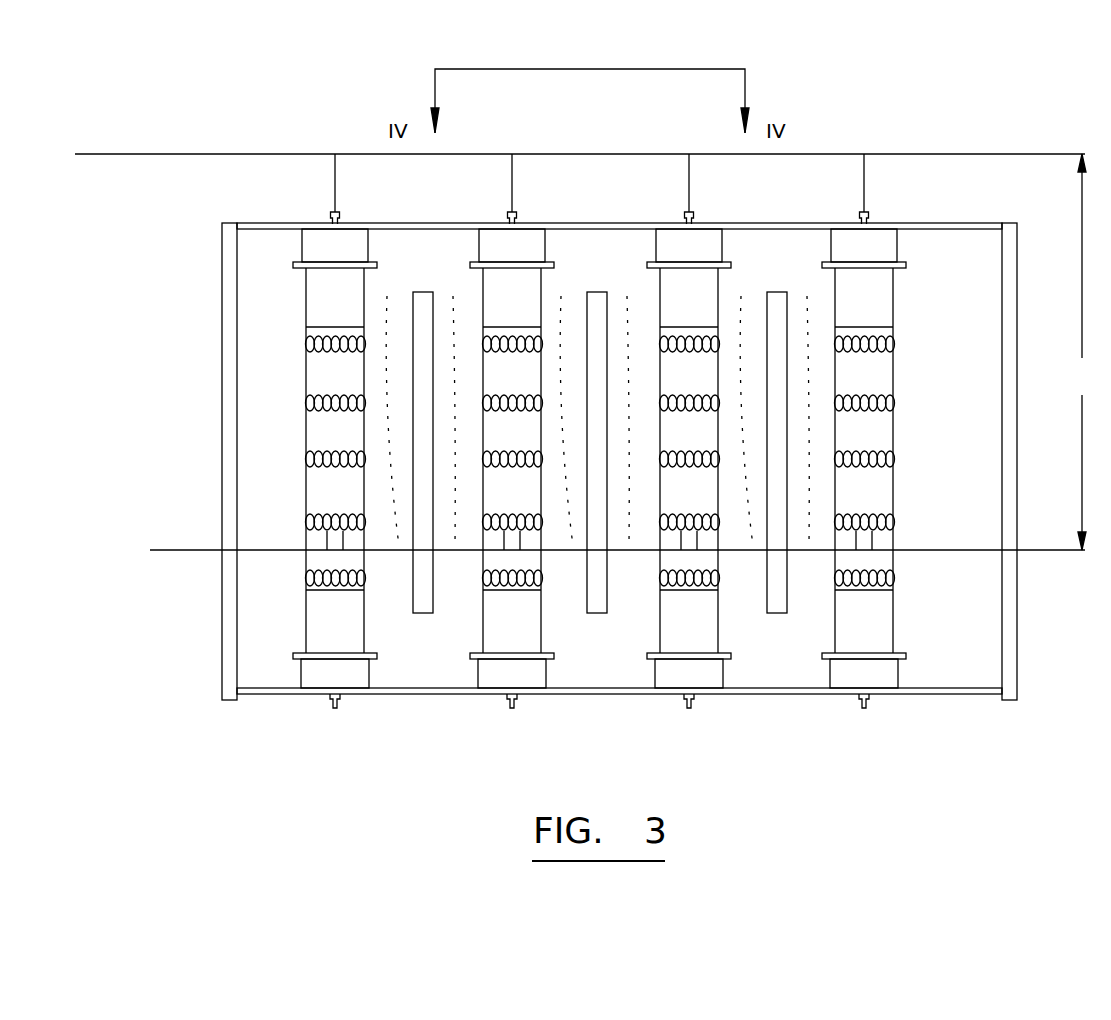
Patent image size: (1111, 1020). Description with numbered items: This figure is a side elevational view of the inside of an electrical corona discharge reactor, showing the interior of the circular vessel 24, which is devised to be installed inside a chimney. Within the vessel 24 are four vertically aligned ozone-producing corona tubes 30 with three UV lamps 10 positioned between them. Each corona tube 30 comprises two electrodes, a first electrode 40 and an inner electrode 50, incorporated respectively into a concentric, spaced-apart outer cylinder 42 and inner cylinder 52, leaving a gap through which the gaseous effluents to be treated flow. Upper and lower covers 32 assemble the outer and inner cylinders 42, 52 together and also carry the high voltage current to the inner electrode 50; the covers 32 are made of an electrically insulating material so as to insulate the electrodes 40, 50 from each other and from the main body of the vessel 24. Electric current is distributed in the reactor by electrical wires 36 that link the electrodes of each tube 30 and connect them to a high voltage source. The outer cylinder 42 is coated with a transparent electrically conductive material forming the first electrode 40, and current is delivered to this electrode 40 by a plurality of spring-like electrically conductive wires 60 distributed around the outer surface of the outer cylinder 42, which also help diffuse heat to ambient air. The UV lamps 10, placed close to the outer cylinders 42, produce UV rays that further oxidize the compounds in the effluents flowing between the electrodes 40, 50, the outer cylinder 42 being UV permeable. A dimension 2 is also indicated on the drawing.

The dimension 2 is at (1094, 352).
The UV lamp 10 is at (425, 606).
The circular vessel 24 is at (228, 308).
The corona tube 30 is at (265, 598).
The cover 32 is at (530, 240).
The electrical wire 36 is at (882, 154).
The first electrode 40 is at (313, 623).
The outer cylinder 42 is at (303, 307).
The inner electrode 50 is at (870, 218).
The inner cylinder 52 is at (857, 618).
The spring-like electrically conductive wire 60 is at (304, 460).